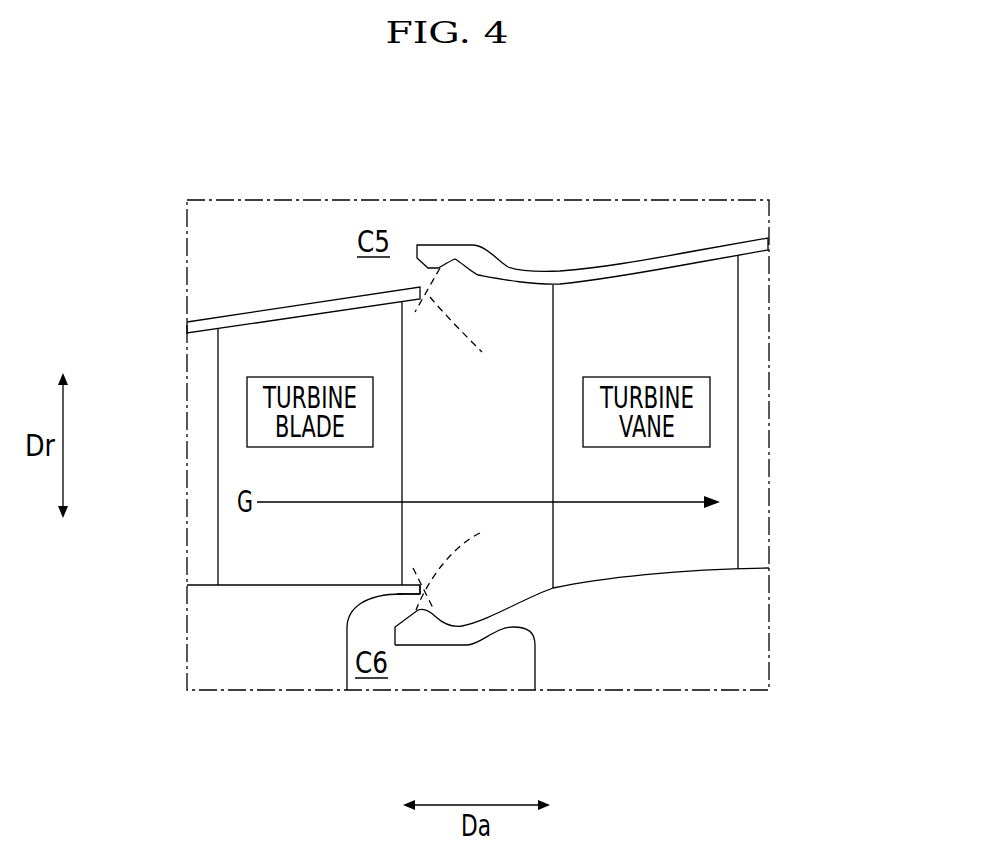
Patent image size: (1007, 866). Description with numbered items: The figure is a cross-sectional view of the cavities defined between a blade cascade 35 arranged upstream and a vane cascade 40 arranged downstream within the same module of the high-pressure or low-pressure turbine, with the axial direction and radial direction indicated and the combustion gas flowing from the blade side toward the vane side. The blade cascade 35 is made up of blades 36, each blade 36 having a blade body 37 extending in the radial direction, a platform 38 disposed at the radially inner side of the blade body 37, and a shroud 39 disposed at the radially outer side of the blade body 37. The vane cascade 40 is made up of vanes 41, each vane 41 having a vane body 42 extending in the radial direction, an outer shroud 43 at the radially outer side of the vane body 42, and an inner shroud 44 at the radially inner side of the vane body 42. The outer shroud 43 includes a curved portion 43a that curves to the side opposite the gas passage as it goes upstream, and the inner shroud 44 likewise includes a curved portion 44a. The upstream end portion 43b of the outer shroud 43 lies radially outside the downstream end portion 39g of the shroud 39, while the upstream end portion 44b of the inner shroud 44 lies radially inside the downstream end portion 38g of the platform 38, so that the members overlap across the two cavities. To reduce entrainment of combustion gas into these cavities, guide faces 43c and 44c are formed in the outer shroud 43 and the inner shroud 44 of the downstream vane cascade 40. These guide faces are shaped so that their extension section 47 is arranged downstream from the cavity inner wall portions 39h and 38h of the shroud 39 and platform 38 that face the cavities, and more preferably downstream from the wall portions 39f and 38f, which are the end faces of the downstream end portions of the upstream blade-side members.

The blade cascade 35 is at (322, 292).
The blade 36 is at (240, 467).
The blade body 37 is at (230, 361).
The platform 38 is at (247, 583).
The wall portion 38f is at (423, 596).
The downstream end portion 38g is at (397, 590).
The cavity inner wall portion 38h is at (395, 604).
The shroud 39 is at (262, 308).
The wall portion 39f is at (435, 256).
The downstream end portion 39g is at (413, 303).
The cavity inner wall portion 39h is at (412, 277).
The vane cascade 40 is at (700, 238).
The vane 41 is at (722, 352).
The vane body 42 is at (720, 315).
The outer shroud 43 is at (748, 241).
The curved portion 43a is at (508, 266).
The upstream end portion 43b is at (441, 254).
The guide face 43c is at (455, 260).
The inner shroud 44 is at (707, 568).
The curved portion 44a is at (490, 631).
The upstream end portion 44b is at (433, 646).
The guide face 44c is at (443, 620).
The extension section 47 is at (462, 453).